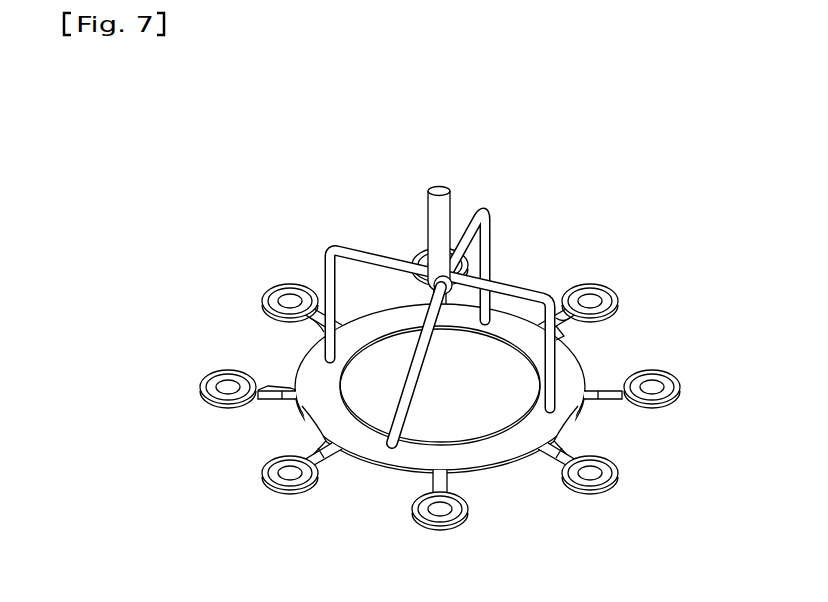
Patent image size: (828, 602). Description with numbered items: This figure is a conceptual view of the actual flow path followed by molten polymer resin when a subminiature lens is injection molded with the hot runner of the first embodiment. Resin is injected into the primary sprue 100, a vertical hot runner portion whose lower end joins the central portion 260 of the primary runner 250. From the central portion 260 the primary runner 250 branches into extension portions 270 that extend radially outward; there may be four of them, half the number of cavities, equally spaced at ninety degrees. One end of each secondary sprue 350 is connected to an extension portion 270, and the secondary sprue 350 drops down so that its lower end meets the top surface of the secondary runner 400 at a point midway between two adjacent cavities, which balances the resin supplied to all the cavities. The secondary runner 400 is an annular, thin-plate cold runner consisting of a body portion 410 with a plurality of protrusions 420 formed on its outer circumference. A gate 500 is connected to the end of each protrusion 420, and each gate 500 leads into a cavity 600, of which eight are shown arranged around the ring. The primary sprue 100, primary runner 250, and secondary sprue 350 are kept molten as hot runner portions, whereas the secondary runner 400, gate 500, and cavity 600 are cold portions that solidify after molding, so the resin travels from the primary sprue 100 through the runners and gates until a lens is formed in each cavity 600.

The primary sprue 100 is at (440, 185).
The primary runner 250 is at (358, 248).
The central portion 260 is at (426, 258).
The extension portion 270 is at (541, 292).
The secondary sprue 350 is at (556, 337).
The secondary runner 400 is at (407, 400).
The body portion 410 is at (373, 445).
The protrusion 420 is at (278, 401).
The gate 500 is at (262, 384).
The cavity 600 is at (407, 393).